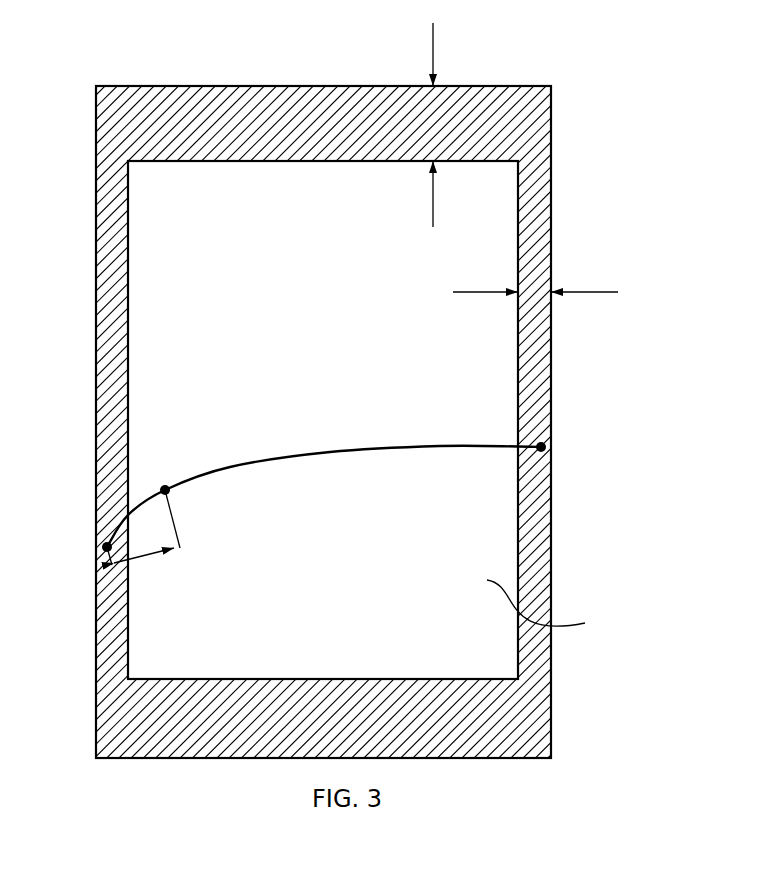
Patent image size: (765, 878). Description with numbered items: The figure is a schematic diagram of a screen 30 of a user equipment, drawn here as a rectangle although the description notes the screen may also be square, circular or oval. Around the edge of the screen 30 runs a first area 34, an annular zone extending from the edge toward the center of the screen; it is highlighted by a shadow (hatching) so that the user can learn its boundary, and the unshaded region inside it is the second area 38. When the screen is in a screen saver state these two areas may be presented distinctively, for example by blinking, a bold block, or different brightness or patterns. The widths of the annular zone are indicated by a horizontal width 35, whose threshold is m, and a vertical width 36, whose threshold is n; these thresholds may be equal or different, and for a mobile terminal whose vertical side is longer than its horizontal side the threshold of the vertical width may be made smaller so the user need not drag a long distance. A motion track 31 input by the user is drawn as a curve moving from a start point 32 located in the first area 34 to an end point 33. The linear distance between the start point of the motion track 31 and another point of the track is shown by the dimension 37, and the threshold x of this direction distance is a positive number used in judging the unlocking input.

The screen 30 is at (325, 86).
The motion track 31 is at (352, 452).
The start point 32 is at (102, 555).
The end point 33 is at (548, 457).
The first area 34 is at (540, 688).
The horizontal width 35 is at (583, 292).
The vertical width 36 is at (433, 63).
The linear distance 37 is at (163, 552).
The second area 38 is at (544, 614).